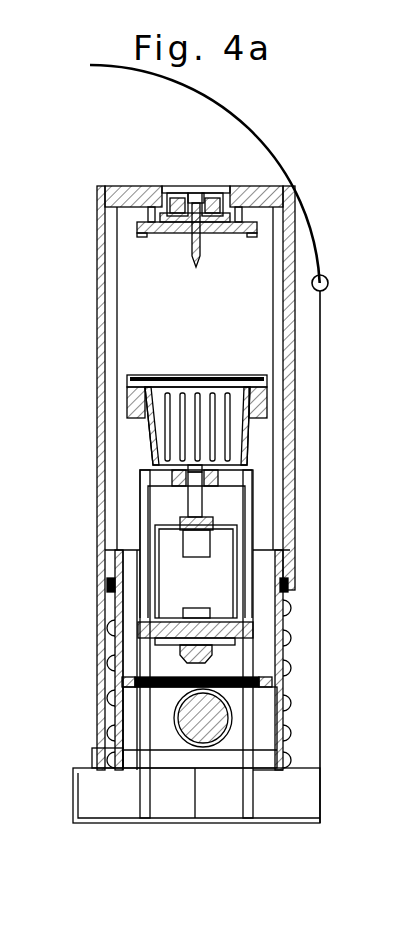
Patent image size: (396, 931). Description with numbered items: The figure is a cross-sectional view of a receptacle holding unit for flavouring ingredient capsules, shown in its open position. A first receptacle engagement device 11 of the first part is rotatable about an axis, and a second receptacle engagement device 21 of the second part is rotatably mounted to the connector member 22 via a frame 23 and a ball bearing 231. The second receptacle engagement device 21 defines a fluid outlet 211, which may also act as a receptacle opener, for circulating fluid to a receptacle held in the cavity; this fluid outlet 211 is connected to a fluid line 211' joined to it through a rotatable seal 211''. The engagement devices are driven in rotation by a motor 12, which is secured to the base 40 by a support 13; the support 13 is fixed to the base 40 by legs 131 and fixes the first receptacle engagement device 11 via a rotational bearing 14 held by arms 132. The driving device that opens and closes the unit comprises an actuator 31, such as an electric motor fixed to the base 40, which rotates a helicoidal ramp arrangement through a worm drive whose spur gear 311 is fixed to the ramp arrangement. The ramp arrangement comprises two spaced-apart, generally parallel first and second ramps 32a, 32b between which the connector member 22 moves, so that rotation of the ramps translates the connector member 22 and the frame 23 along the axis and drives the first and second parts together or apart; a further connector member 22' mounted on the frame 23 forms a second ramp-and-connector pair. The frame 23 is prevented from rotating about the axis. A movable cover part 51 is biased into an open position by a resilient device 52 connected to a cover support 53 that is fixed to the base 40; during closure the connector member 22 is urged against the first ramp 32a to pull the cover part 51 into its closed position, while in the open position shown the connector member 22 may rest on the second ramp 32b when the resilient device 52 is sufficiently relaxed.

The movable cover part 51 is at (275, 148).
The resilient device 52 is at (326, 280).
The cover support 53 is at (322, 502).
The frame 23 is at (97, 362).
The second receptacle engagement device 21 is at (165, 230).
The fluid outlet 211 is at (216, 244).
The fluid line 211' is at (175, 155).
The rotatable seal 211'' is at (219, 179).
The ball bearing 231 is at (170, 200).
The first receptacle engagement device 11 is at (188, 378).
The arms 132 is at (142, 490).
The rotational bearing 14 is at (210, 484).
The motor 12 is at (196, 567).
The support 13 is at (207, 632).
The legs 131 is at (140, 775).
The spur gear 311 is at (170, 674).
The actuator 31 is at (203, 720).
The connector member 22 is at (304, 660).
The connector member 22' is at (69, 557).
The first ramp 32a is at (110, 686).
The second ramp 32b is at (110, 718).
The base 40 is at (75, 800).